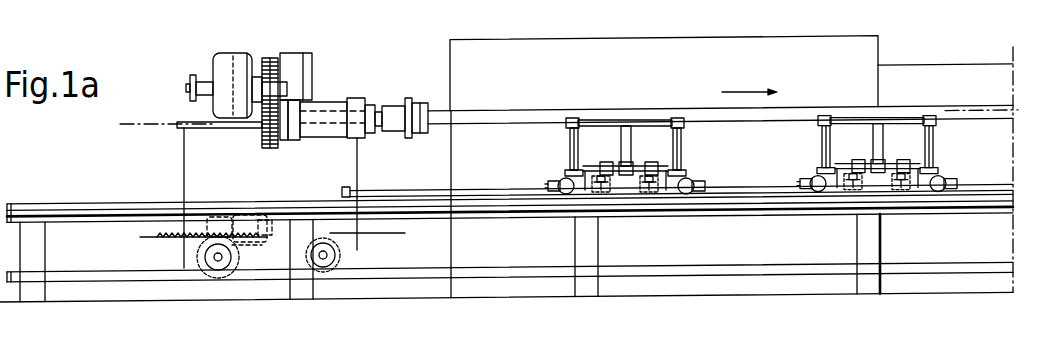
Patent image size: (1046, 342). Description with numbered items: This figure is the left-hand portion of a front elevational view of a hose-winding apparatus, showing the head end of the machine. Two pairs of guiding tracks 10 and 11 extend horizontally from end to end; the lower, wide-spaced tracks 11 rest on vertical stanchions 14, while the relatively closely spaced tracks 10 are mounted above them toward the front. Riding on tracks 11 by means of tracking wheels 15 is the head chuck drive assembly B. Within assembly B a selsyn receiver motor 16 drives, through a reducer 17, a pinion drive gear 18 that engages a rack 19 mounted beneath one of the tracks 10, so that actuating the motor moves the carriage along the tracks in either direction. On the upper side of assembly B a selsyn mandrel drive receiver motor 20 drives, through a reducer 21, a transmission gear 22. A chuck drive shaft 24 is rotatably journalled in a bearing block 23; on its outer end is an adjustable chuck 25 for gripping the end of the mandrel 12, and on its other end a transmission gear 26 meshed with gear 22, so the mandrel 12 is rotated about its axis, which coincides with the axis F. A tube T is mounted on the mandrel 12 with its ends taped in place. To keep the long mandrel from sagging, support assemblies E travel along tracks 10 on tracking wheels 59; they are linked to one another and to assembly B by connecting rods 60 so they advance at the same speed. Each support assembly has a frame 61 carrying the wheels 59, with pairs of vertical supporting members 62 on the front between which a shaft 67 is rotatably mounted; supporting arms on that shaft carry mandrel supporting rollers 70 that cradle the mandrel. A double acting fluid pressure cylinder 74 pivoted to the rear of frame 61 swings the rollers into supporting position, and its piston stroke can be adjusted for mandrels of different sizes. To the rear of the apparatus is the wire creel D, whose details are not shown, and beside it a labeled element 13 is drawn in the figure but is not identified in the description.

The tracks 10 is at (90, 203).
The tracks 11 is at (743, 267).
The mandrel 12 is at (425, 100).
The housing 13 is at (955, 64).
The vertical stanchions 14 is at (33, 262).
The tracking wheels 15 is at (232, 257).
The selsyn receiver motor 16 is at (248, 212).
The reducer 17 is at (215, 215).
The pinion drive gear 18 is at (198, 254).
The rack 19 is at (145, 233).
The selsyn mandrel drive receiver motor 20 is at (304, 62).
The reducer 21 is at (237, 52).
The transmission gear 22 is at (271, 58).
The bearing block 23 is at (320, 105).
The chuck drive shaft 24 is at (381, 134).
The adjustable chuck 25 is at (410, 98).
The transmission gear 26 is at (272, 146).
The tracking wheels 59 is at (558, 178).
The connecting rods 60 is at (490, 186).
The frame 61 is at (641, 192).
The vertical supporting members 62 is at (583, 160).
The shaft 67 is at (643, 140).
The mandrel supporting rollers 70 is at (652, 122).
The double acting fluid pressure cylinder 74 is at (608, 195).
The head chuck drive assembly B is at (378, 80).
The wire creel D is at (732, 35).
The support assemblies E is at (601, 116).
The axis F is at (569, 117).
The tube T is at (532, 114).